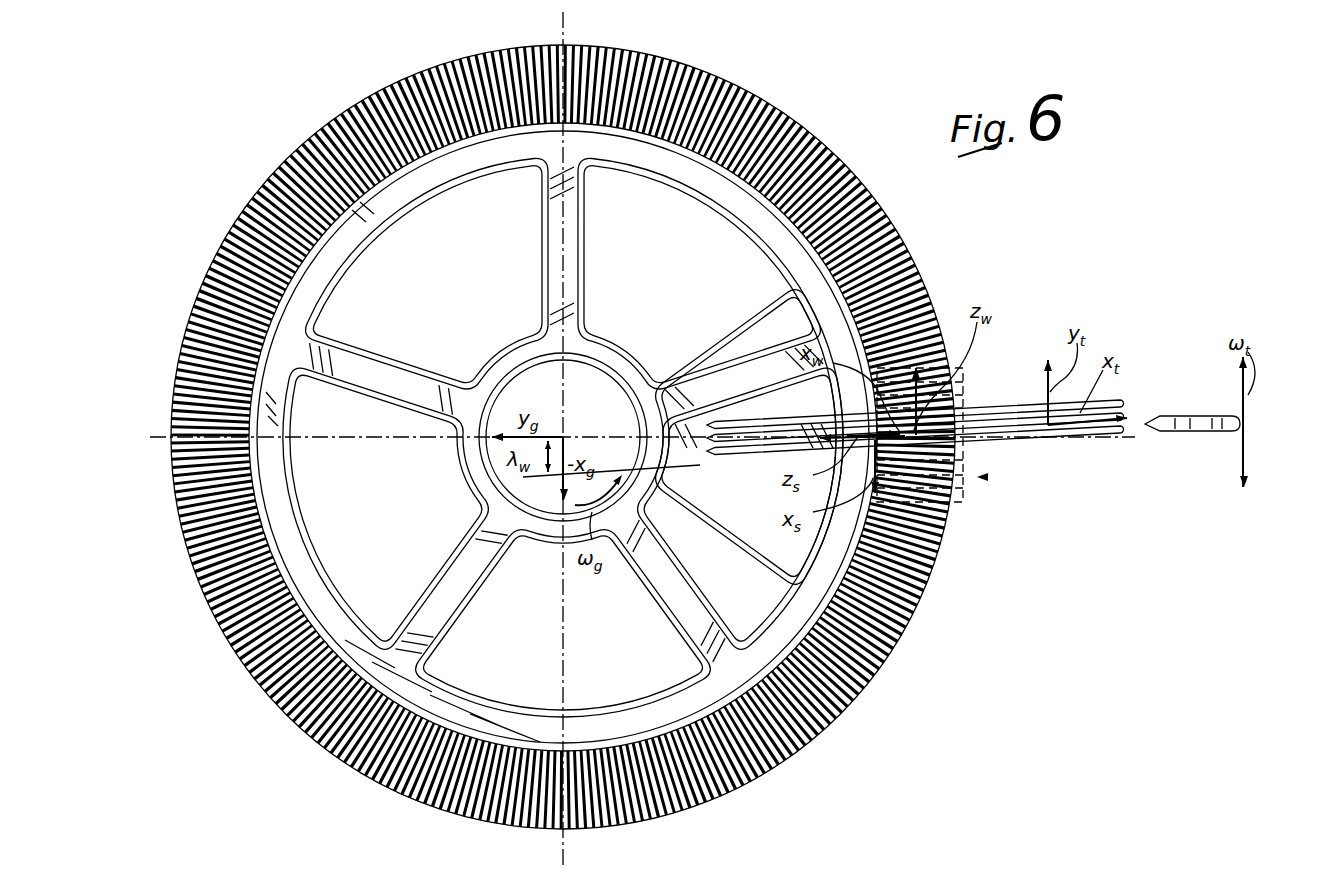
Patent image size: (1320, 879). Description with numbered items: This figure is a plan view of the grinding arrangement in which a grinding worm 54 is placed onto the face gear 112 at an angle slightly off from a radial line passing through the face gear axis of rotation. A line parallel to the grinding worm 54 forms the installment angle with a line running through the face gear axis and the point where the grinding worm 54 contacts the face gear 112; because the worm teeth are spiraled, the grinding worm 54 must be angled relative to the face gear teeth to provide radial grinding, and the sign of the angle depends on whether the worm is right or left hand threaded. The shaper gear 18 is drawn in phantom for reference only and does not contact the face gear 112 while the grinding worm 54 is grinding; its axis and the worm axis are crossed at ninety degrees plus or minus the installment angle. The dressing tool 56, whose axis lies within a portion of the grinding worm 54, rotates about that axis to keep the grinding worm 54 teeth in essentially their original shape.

The face gear 112 is at (790, 752).
The shaper gear 18 is at (977, 477).
The grinding worm 54 is at (1094, 437).
The dressing tool 56 is at (1171, 420).